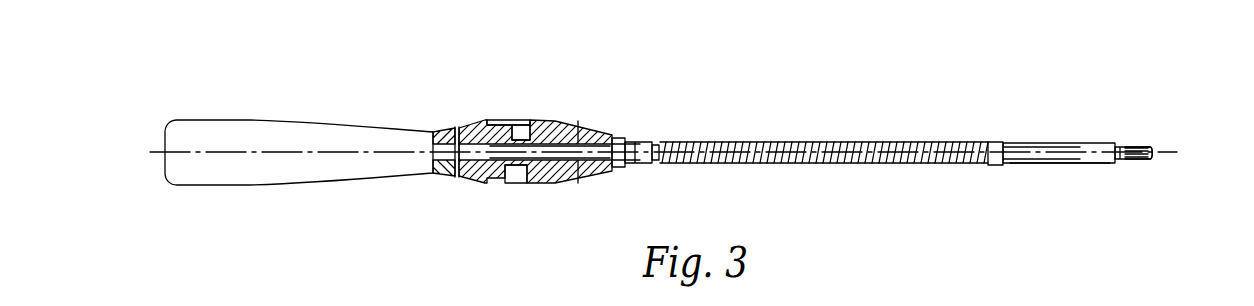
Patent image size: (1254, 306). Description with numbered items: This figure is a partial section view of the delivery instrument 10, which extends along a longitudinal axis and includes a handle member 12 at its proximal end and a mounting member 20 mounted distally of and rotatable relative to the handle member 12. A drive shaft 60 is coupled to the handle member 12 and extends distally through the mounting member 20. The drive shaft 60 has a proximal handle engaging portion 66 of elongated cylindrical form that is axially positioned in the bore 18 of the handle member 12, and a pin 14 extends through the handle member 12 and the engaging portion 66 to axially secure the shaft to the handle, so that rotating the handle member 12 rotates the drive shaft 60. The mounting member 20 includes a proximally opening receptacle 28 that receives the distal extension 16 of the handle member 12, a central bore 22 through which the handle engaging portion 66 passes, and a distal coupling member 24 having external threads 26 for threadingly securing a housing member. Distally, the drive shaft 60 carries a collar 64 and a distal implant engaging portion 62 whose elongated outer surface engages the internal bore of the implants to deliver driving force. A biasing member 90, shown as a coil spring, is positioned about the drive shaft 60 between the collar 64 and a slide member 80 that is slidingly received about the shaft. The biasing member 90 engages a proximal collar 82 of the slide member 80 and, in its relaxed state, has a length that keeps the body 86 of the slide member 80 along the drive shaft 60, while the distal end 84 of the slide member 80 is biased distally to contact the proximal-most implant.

The delivery instrument 10 is at (617, 97).
The handle member 12 is at (258, 127).
The pin 14 is at (452, 170).
The distal extension 16 is at (517, 122).
The bore 18 is at (452, 133).
The mounting member 20 is at (530, 190).
The central bore 22 is at (578, 126).
The distal coupling member 24 is at (640, 138).
The external threads 26 is at (635, 164).
The proximally opening receptacle 28 is at (497, 120).
The drive shaft 60 is at (1122, 162).
The distal implant engaging portion 62 is at (1130, 160).
The collar 64 is at (660, 146).
The proximal handle engaging portion 66 is at (570, 160).
The slide member 80 is at (1068, 141).
The proximal collar 82 is at (990, 142).
The distal end 84 is at (1115, 161).
The body 86 is at (1030, 164).
The biasing member 90 is at (900, 140).